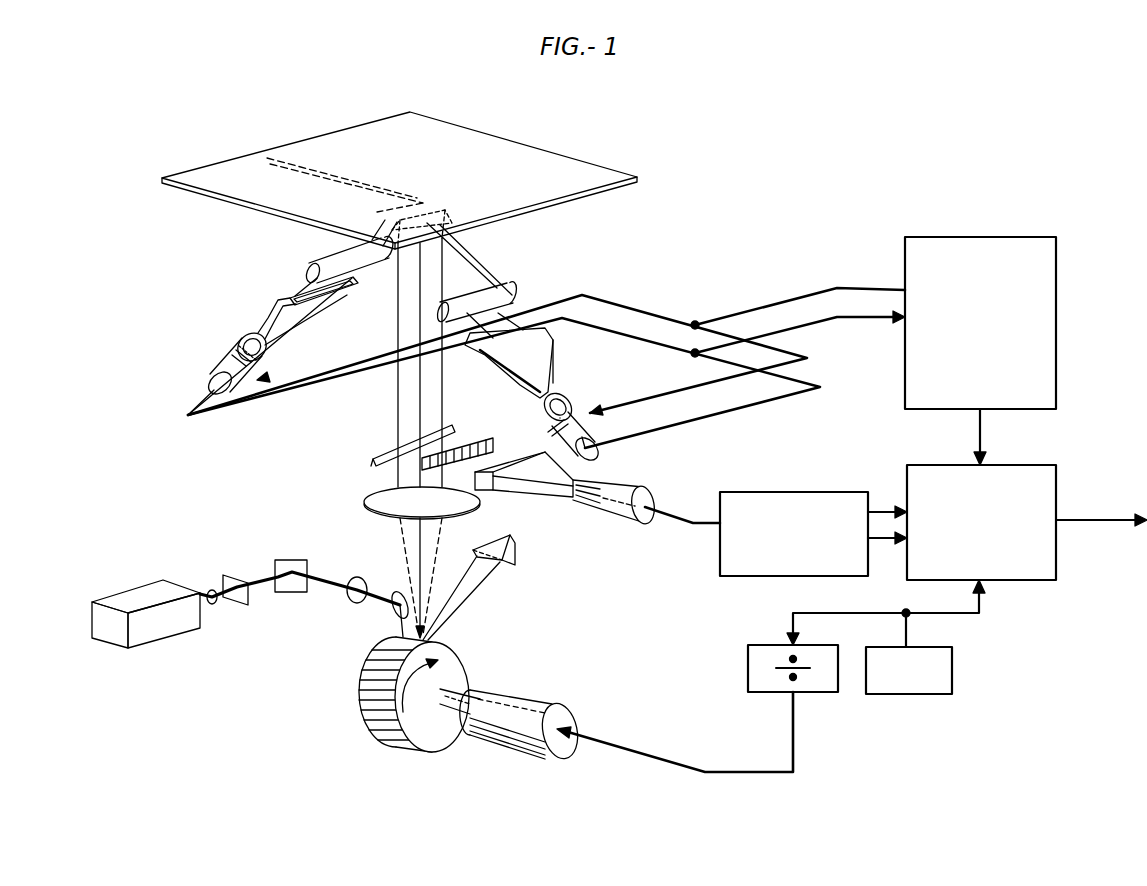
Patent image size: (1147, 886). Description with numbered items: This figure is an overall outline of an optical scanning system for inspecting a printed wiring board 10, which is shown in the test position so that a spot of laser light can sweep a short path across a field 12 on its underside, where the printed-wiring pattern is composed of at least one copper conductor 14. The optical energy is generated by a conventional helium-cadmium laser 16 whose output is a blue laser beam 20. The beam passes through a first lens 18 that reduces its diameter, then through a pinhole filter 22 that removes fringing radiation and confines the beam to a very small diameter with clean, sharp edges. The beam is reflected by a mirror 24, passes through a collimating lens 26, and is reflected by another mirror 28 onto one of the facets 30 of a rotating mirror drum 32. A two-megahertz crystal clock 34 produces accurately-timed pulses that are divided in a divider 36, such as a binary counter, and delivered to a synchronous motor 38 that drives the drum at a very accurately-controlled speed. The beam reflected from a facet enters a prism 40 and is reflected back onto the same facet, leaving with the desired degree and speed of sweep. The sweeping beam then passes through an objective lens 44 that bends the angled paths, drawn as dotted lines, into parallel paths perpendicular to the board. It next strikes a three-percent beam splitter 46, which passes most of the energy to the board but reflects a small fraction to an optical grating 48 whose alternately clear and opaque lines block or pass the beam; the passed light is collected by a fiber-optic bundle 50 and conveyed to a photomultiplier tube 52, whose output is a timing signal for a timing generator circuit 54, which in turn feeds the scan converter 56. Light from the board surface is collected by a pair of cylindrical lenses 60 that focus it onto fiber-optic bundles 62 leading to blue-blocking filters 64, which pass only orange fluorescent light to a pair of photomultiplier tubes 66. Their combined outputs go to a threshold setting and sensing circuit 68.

The printed wiring board 10 is at (262, 148).
The field 12 is at (440, 210).
The copper conductor 14 is at (373, 183).
The helium-cadmium laser 16 is at (142, 590).
The first lens 18 is at (211, 590).
The laser beam 20 is at (478, 506).
The pinhole filter 22 is at (237, 575).
The mirror 24 is at (307, 570).
The collimating lens 26 is at (348, 598).
The mirror 28 is at (395, 614).
The facet 30 is at (372, 683).
The rotating mirror drum 32 is at (470, 676).
The two MHz crystal clock 34 is at (952, 677).
The divider 36 is at (748, 672).
The synchronous motor 38 is at (528, 698).
The prism 40 is at (517, 541).
The objective lens 44 is at (365, 507).
The beam splitter 46 is at (375, 453).
The optical grating 48 is at (490, 440).
The fiber-optic bundle 50 is at (580, 471).
The photomultiplier tube 52 is at (625, 490).
The timing generator circuit 54 is at (800, 492).
The scan converter 56 is at (948, 465).
The cylindrical lenses 60 is at (322, 263).
The fiber-optic bundle 62 is at (274, 298).
The blue-blocking filters 64 is at (248, 340).
The photomultiplier tubes 66 is at (218, 366).
The threshold setting and sensing circuit 68 is at (973, 237).